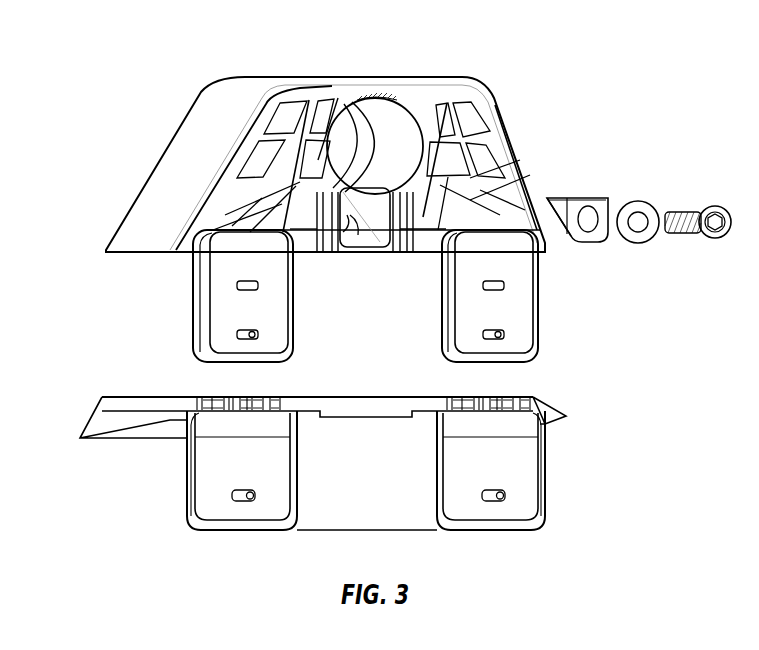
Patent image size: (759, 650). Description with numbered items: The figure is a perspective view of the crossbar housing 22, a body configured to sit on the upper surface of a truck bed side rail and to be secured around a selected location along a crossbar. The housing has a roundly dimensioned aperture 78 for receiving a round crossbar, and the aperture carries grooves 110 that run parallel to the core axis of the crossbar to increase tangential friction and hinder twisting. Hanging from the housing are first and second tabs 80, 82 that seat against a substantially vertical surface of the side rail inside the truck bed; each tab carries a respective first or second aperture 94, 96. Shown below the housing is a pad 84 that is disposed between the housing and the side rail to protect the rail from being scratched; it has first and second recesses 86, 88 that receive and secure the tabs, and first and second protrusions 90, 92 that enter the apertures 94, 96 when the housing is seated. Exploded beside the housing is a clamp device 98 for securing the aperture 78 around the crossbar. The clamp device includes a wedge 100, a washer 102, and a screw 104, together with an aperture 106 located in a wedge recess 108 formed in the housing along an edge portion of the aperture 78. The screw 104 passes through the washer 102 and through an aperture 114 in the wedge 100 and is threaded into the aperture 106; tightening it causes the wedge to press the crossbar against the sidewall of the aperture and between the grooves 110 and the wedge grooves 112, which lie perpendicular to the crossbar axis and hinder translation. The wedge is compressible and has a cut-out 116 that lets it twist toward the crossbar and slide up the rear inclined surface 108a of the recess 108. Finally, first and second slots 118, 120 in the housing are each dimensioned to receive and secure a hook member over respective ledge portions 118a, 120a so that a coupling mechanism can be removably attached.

The crossbar housing 22 is at (240, 93).
The aperture 78 is at (400, 143).
The first tab 80 is at (195, 306).
The second tab 82 is at (540, 306).
The pad 84 is at (90, 420).
The first recess 86 is at (212, 466).
The second recess 88 is at (520, 471).
The first protrusion 90 is at (256, 500).
The second protrusion 92 is at (501, 500).
The first aperture 94 is at (258, 334).
The second aperture 96 is at (505, 334).
The clamp device 98 is at (644, 191).
The wedge 100 is at (600, 207).
The washer 102 is at (639, 240).
The screw 104 is at (712, 240).
The aperture 106 is at (343, 212).
The wedge recess 108 is at (365, 232).
The rear inclined surface 108a is at (373, 240).
The grooves 110 is at (397, 98).
The wedge grooves 112 is at (572, 200).
The aperture 114 is at (590, 227).
The cut-out 116 is at (571, 236).
The first slot 118 is at (287, 215).
The ledge portion 118a is at (300, 237).
The second slot 120 is at (423, 217).
The ledge portion 120a is at (414, 240).